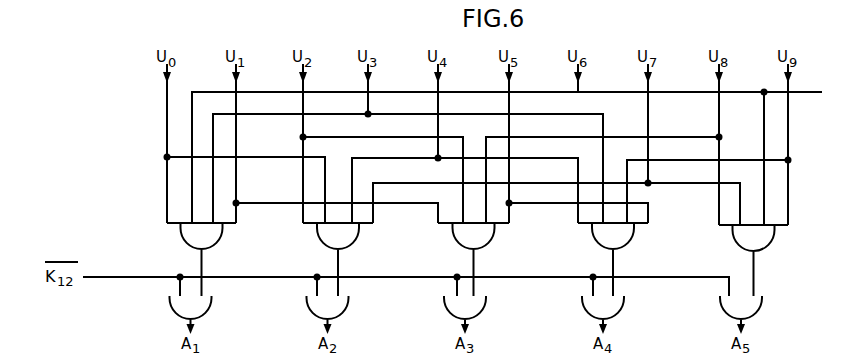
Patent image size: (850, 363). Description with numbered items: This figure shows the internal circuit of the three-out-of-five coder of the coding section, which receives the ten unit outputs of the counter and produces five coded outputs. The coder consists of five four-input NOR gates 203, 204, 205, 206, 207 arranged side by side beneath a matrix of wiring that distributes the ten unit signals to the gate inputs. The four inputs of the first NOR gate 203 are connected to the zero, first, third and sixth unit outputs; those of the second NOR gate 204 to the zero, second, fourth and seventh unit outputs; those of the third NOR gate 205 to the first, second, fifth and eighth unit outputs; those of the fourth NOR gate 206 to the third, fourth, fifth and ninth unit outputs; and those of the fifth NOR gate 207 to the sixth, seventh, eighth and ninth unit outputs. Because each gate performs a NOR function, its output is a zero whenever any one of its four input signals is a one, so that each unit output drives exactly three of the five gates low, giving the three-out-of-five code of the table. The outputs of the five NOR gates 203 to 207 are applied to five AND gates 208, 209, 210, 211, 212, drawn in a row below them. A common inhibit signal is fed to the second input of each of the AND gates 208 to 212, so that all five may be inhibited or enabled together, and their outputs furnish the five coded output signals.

The four-input NOR gate 203 is at (181, 236).
The four-input NOR gate 204 is at (317, 236).
The four-input NOR gate 205 is at (452, 236).
The four-input NOR gate 206 is at (592, 236).
The four-input NOR gate 207 is at (732, 238).
The AND gate 208 is at (170, 306).
The AND gate 209 is at (306, 306).
The AND gate 210 is at (444, 306).
The AND gate 211 is at (582, 306).
The AND gate 212 is at (720, 306).